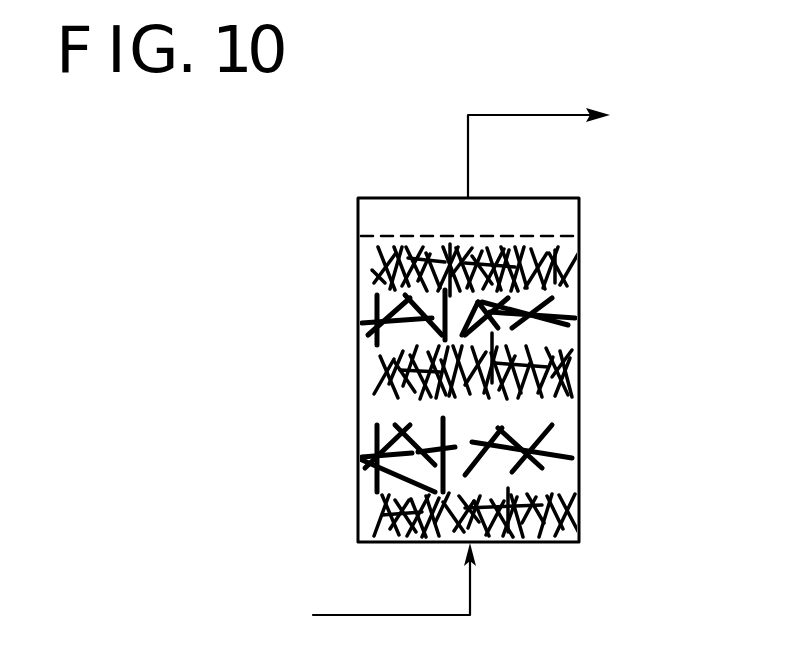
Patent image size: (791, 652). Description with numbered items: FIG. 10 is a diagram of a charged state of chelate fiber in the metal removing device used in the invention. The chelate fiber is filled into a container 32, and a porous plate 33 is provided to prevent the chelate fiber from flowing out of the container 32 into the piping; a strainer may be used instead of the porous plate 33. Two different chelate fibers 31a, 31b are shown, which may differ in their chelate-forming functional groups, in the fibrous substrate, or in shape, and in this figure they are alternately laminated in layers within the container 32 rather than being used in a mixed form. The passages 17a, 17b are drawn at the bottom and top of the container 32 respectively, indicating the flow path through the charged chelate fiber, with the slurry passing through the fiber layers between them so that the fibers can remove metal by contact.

The inlet passage 17a is at (470, 590).
The outlet passage 17b is at (468, 143).
The container 32 is at (358, 217).
The porous plate 33 is at (547, 234).
The chelate fiber 31a is at (574, 319).
The chelate fiber 31b is at (574, 379).